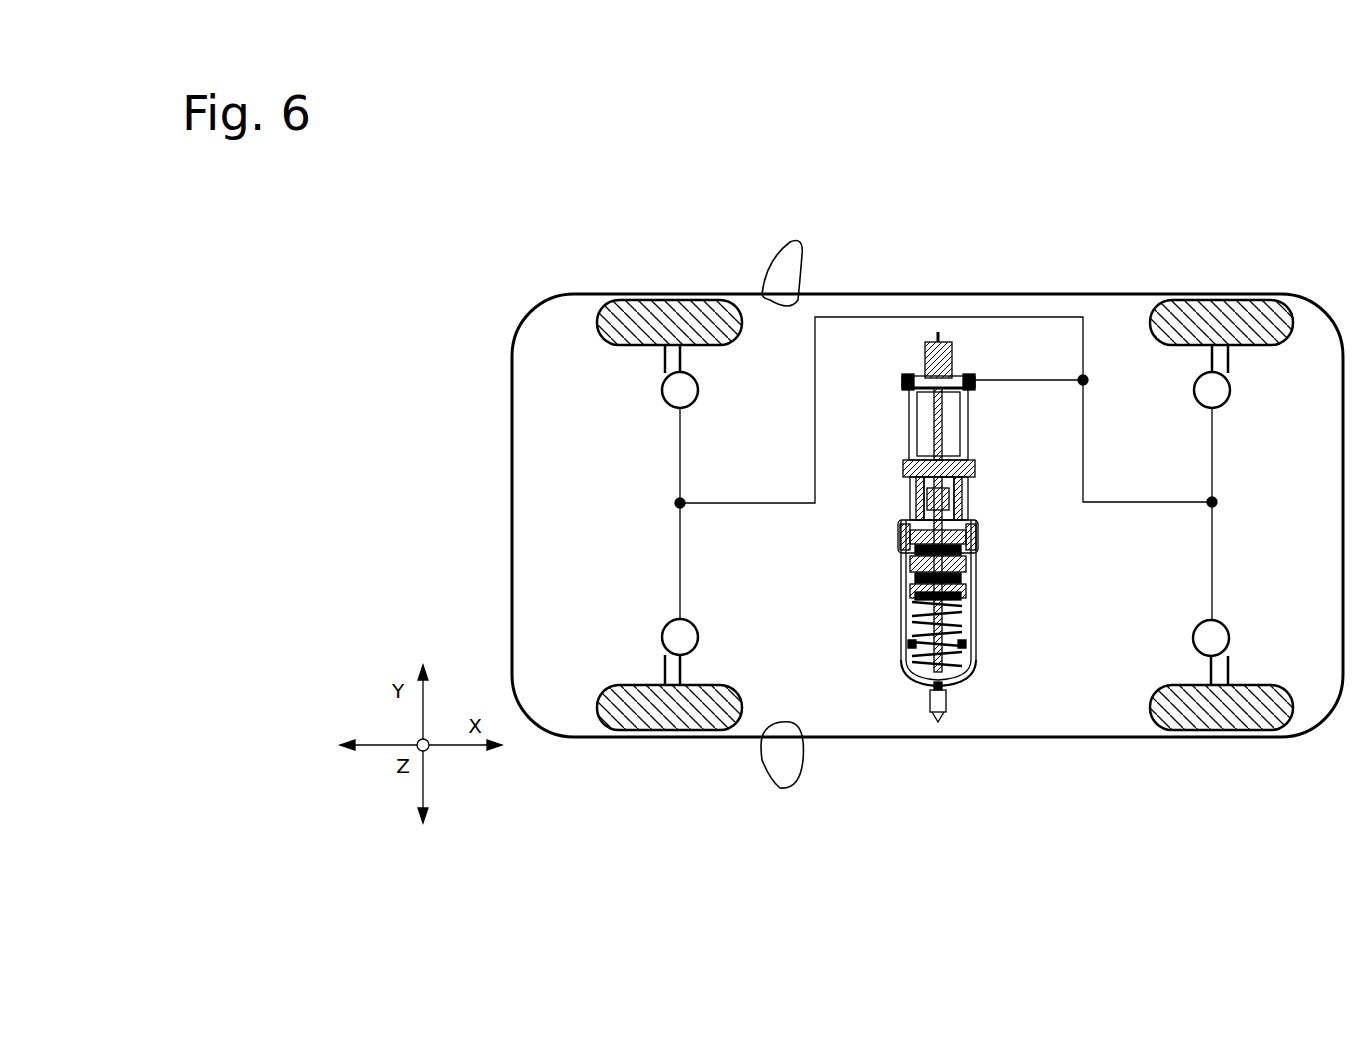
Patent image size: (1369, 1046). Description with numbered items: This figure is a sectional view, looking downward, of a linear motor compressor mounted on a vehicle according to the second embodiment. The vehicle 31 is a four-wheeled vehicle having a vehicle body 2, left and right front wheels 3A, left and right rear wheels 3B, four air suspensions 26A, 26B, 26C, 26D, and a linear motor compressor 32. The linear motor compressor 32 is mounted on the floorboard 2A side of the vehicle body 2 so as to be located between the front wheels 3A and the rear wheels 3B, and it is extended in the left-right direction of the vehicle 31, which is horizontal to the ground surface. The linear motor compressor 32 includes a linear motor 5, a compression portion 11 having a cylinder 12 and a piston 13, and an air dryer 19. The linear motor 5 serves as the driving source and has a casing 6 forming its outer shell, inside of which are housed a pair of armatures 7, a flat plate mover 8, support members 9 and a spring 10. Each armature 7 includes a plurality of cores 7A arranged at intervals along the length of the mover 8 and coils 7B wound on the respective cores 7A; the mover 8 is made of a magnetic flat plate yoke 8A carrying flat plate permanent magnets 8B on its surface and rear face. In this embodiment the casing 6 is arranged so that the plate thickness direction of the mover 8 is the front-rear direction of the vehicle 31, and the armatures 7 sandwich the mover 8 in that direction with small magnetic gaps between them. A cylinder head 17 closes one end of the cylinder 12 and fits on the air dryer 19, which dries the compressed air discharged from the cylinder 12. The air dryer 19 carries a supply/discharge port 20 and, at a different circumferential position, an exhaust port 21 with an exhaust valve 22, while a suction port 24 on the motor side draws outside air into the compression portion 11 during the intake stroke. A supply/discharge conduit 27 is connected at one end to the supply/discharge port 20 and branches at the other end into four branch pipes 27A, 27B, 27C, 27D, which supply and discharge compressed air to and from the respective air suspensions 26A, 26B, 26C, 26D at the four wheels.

The vehicle body 2 is at (1018, 294).
The floorboard 2A is at (876, 715).
The front wheels 3A is at (640, 298).
The rear wheels 3B is at (1215, 325).
The linear motor 5 is at (930, 527).
The casing 6 is at (975, 670).
The armatures 7 is at (975, 600).
The cores 7A is at (900, 552).
The coils 7B is at (905, 572).
The mover 8 is at (905, 520).
The yoke 8A is at (965, 615).
The permanent magnets 8B is at (975, 577).
The support members 9 is at (905, 528).
The spring 10 is at (905, 640).
The compression portion 11 is at (903, 493).
The cylinder 12 is at (907, 480).
The piston 13 is at (950, 500).
The cylinder head 17 is at (975, 470).
The air dryer 19 is at (910, 405).
The supply/discharge port 20 is at (975, 382).
The exhaust port 21 is at (905, 380).
The exhaust valve 22 is at (952, 350).
The suction port 24 is at (948, 710).
The air suspension 26A is at (672, 636).
The air suspension 26B is at (677, 395).
The air suspension 26C is at (1222, 640).
The air suspension 26D is at (1225, 398).
The supply/discharge conduit 27 is at (1085, 357).
The branch pipe 27A is at (680, 565).
The branch pipe 27B is at (680, 450).
The branch pipe 27C is at (1212, 575).
The branch pipe 27D is at (1212, 468).
The vehicle 31 is at (851, 265).
The linear motor compressor 32 is at (952, 394).